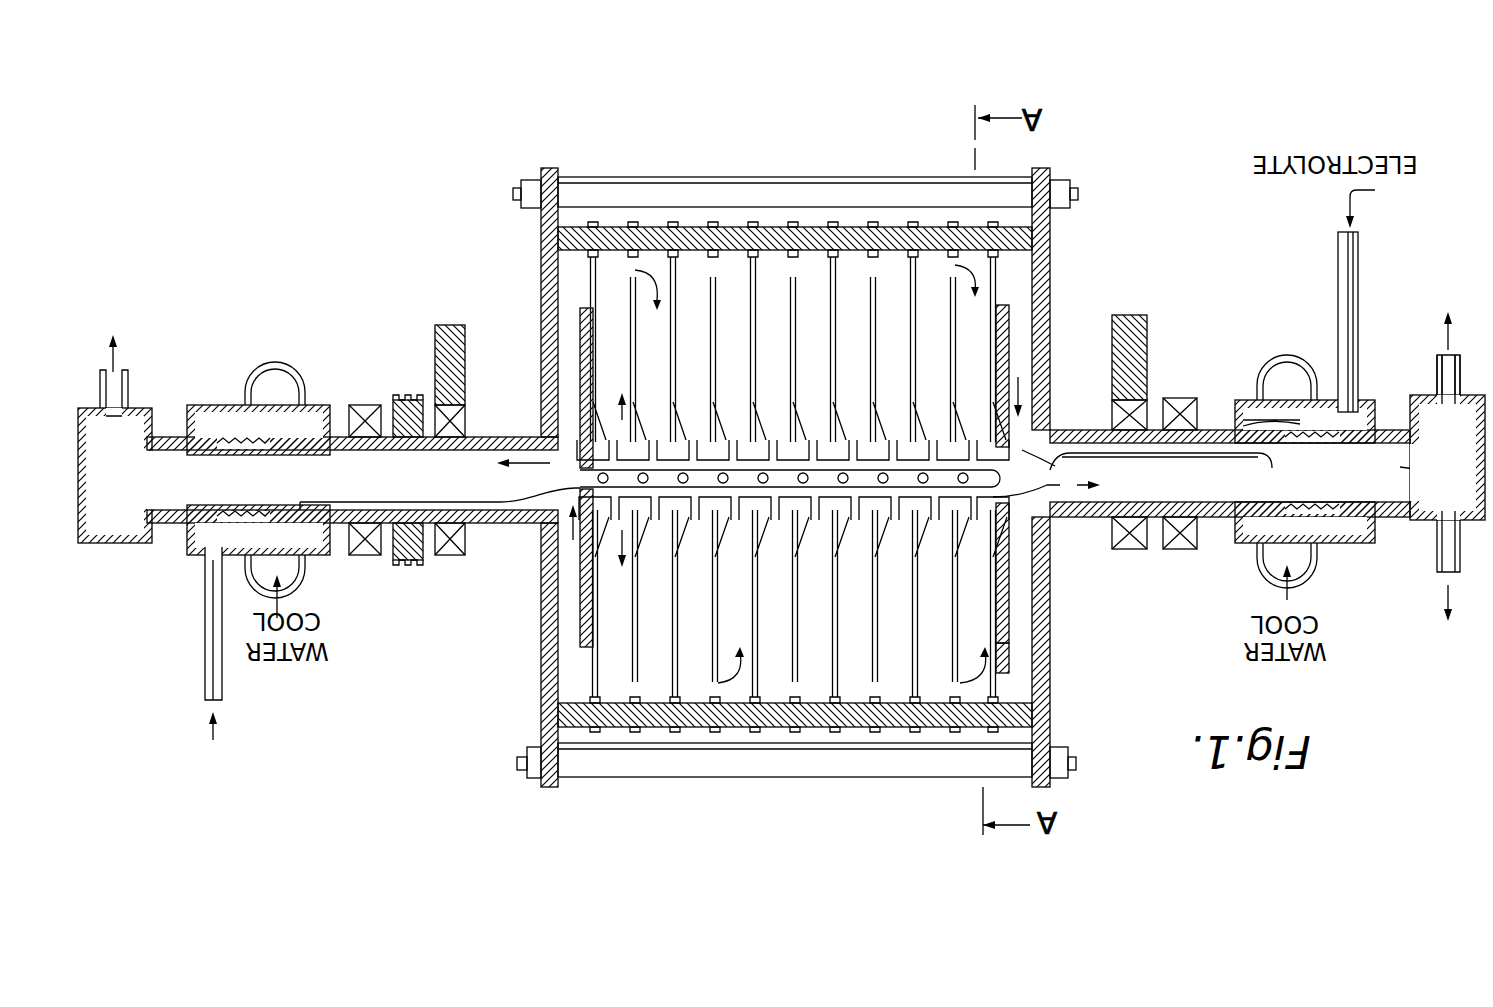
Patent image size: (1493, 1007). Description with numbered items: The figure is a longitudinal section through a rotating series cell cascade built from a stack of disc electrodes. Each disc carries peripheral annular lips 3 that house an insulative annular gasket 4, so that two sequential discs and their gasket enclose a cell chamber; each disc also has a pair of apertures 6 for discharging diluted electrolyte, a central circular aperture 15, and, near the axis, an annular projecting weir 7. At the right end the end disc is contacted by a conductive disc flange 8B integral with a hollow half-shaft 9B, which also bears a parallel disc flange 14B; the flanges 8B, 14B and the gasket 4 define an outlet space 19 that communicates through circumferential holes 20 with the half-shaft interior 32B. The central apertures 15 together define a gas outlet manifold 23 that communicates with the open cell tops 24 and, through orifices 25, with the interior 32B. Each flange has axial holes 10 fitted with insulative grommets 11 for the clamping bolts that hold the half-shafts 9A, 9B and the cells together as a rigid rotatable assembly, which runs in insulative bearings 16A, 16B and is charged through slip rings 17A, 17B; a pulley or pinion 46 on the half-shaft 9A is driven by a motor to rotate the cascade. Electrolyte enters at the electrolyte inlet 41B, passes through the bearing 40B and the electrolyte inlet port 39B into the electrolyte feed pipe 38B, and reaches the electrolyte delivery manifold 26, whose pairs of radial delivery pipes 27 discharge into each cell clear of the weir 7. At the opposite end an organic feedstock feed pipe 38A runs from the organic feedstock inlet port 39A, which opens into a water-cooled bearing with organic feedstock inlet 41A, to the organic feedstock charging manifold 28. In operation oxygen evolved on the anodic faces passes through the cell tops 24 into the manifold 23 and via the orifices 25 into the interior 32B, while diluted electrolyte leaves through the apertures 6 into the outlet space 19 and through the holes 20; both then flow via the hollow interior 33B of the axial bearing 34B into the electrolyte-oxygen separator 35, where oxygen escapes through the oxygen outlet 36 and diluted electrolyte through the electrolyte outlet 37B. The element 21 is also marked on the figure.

The peripheral annular lips 3 is at (700, 690).
The insulative annular gasket 4 is at (933, 233).
The second pair of apertures 6 is at (985, 653).
The annular projecting weir 7 is at (1035, 683).
The conductive disc flange 8B is at (1013, 643).
The hollow half-shaft 9A is at (348, 433).
The hollow half-shaft 9B is at (1207, 410).
The axial holes 10 is at (1066, 192).
The insulative grommet 11 is at (1046, 180).
The disc flange 14B is at (928, 537).
The central circular aperture 15 is at (750, 500).
The insulative bearing 16A is at (367, 553).
The insulative bearing 16B is at (1182, 549).
The slip ring 17A is at (450, 553).
The slip ring 17B is at (1132, 549).
The outlet space 19 is at (1022, 313).
The circumferential holes or slots 20 is at (1050, 363).
The electrode plate 21 is at (1013, 580).
The gas outlet manifold 23 is at (853, 515).
The open cell tops 24 is at (820, 550).
The orifices 25 is at (1013, 553).
The electrolyte delivery manifold 26 is at (590, 427).
The delivery pipes 27 is at (782, 263).
The organic feedstock charging manifold 28 is at (698, 250).
The half-shaft interior 32B is at (1165, 458).
The hollow interior of axial bearing 33B is at (1357, 462).
The axial bearing 34B is at (1295, 427).
The electrolyte-oxygen separator 35 is at (1466, 447).
The oxygen outlet 36 is at (1466, 662).
The electrolyte outlet 37B is at (1395, 185).
The organic feedstock feed pipe 38A is at (503, 505).
The electrolyte feed pipe 38B is at (1160, 422).
The organic feedstock inlet port 39A is at (303, 533).
The electrolyte inlet port 39B is at (1260, 410).
The bearing 40B is at (1320, 547).
The organic feedstock inlet 41A is at (238, 770).
The electrolyte inlet 41B is at (1432, 103).
The pulley or pinion 46 is at (408, 400).